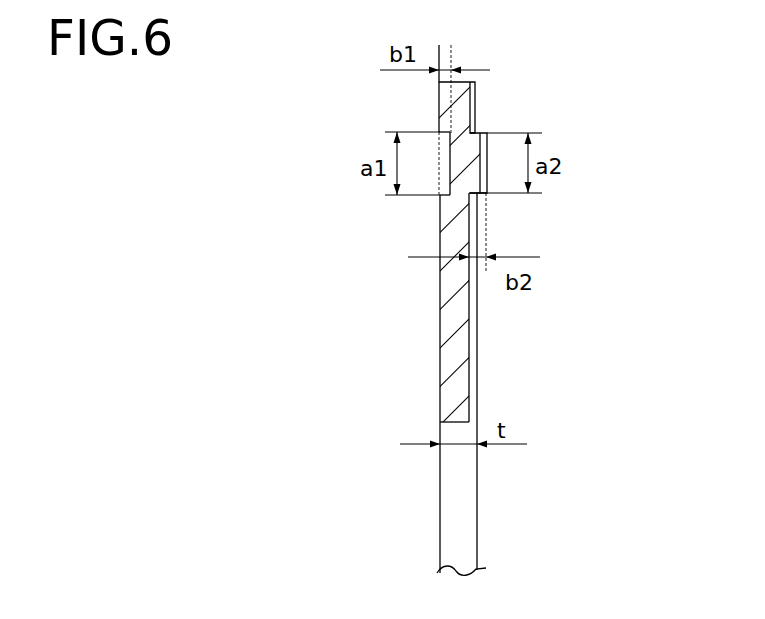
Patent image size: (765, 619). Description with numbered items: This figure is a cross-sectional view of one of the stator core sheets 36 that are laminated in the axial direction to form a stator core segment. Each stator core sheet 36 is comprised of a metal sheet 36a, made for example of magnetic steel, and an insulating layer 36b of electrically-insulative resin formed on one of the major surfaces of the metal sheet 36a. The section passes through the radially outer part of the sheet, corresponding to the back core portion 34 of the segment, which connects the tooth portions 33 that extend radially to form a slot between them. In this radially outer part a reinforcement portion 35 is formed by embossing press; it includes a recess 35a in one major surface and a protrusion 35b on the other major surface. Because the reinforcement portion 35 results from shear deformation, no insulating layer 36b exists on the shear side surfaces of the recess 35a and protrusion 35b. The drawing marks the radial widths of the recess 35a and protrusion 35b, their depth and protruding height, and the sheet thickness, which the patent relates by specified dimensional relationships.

The tooth portion 33 is at (440, 527).
The back core portion 34 is at (440, 332).
The reinforcement portion 35 is at (489, 154).
The recess 35a is at (452, 195).
The protrusion 35b is at (473, 196).
The stator core sheet 36 is at (536, 307).
The metal sheet 36a is at (458, 350).
The insulating layer 36b is at (472, 385).